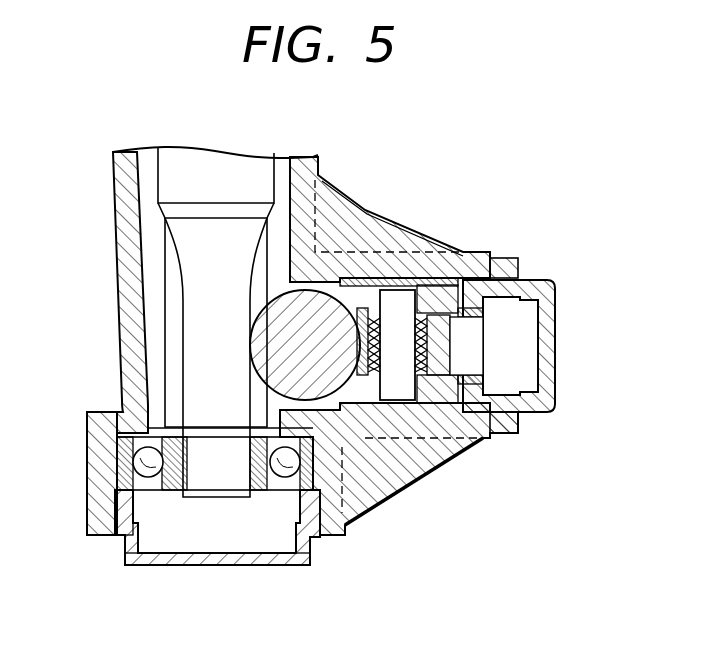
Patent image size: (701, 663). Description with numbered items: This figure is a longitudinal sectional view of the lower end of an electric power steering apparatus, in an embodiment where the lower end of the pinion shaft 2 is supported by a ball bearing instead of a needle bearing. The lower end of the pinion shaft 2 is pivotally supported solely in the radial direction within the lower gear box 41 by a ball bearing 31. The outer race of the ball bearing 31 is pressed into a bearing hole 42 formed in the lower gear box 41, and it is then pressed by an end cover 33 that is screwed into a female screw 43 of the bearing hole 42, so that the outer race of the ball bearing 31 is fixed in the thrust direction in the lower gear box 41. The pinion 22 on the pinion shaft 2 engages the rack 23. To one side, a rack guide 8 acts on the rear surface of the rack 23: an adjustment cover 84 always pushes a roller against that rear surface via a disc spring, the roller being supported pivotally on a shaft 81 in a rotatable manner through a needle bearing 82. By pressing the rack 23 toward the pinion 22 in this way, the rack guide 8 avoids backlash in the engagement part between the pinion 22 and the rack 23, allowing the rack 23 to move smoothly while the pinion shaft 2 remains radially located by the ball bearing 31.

The pinion shaft 2 is at (182, 162).
The lower gear box 41 is at (125, 181).
The pinion 22 is at (173, 318).
The ball bearing 31 is at (120, 455).
The bearing hole 42 is at (112, 483).
The female screw 43 is at (113, 520).
The end cover 33 is at (165, 568).
The rack guide 8 is at (508, 396).
The adjustment cover 84 is at (556, 329).
The needle bearing 82 is at (414, 402).
The shaft 81 is at (398, 405).
The rack 23 is at (320, 365).